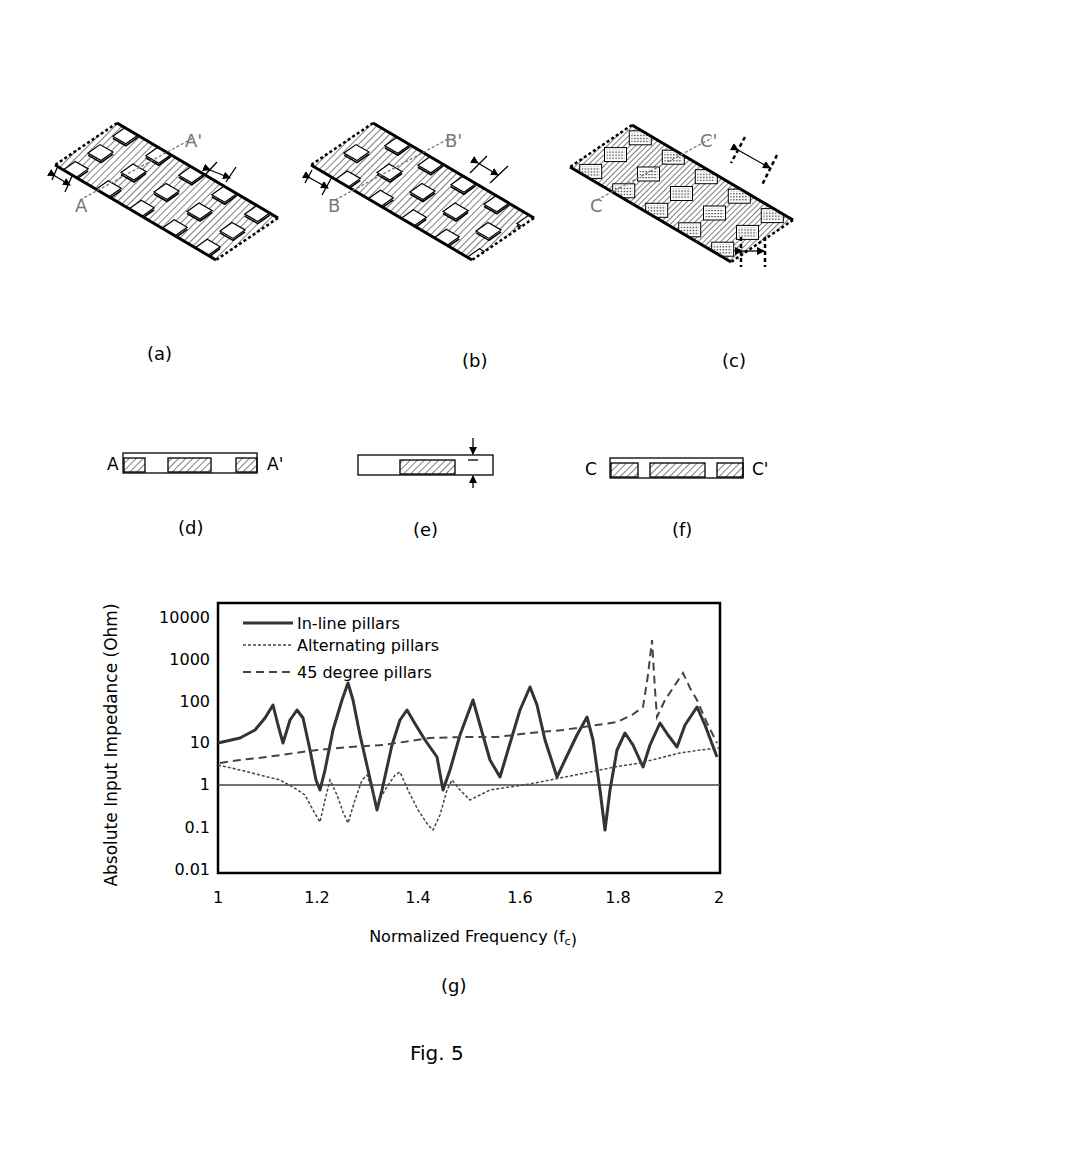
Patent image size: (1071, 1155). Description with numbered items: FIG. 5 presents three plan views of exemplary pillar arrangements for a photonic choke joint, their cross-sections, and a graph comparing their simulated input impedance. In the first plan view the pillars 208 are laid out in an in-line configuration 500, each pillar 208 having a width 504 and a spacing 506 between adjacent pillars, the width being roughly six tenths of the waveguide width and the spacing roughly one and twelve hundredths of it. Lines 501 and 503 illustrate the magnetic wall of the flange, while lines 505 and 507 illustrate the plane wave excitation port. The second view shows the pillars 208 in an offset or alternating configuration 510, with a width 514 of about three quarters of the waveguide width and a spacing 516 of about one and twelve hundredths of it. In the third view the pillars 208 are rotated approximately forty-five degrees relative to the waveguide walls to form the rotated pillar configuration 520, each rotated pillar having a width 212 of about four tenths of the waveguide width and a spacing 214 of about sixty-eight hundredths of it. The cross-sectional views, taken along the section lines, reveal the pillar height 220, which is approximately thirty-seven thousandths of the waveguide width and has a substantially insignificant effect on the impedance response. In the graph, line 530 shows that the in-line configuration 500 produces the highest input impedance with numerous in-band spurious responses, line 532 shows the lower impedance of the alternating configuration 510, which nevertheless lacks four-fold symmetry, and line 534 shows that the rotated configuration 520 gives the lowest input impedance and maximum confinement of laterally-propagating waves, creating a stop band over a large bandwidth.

The in-line configuration 500 is at (117, 55).
The alternating configuration 510 is at (362, 55).
The 45-degree rotated pillar configuration 520 is at (617, 55).
The pillar 208 is at (107, 157).
The line illustrating magnetic wall 501 is at (193, 247).
The line illustrating magnetic wall 503 is at (140, 132).
The line illustrating plane wave excitation port 505 is at (105, 134).
The line illustrating plane wave excitation port 507 is at (260, 237).
The width 504 is at (60, 188).
The spacing 506 is at (227, 160).
The spacing 516 is at (303, 188).
The width 514 is at (495, 160).
The spacing 214 is at (762, 150).
The width 212 is at (755, 263).
The height 220 is at (478, 425).
The line 530 is at (687, 732).
The line 532 is at (680, 752).
The line 534 is at (695, 688).